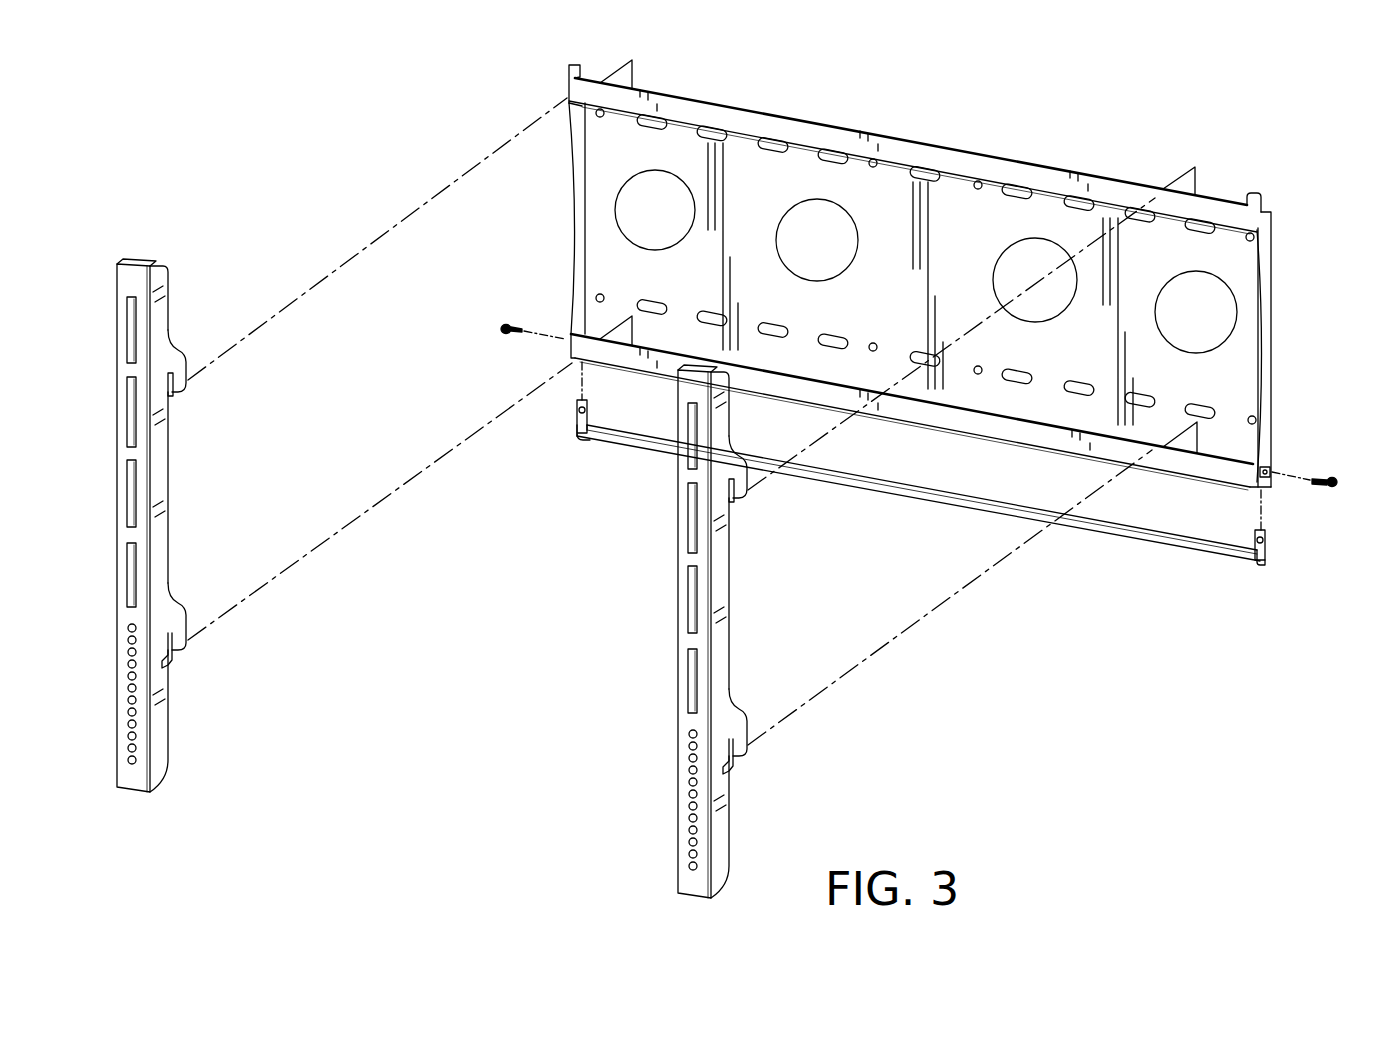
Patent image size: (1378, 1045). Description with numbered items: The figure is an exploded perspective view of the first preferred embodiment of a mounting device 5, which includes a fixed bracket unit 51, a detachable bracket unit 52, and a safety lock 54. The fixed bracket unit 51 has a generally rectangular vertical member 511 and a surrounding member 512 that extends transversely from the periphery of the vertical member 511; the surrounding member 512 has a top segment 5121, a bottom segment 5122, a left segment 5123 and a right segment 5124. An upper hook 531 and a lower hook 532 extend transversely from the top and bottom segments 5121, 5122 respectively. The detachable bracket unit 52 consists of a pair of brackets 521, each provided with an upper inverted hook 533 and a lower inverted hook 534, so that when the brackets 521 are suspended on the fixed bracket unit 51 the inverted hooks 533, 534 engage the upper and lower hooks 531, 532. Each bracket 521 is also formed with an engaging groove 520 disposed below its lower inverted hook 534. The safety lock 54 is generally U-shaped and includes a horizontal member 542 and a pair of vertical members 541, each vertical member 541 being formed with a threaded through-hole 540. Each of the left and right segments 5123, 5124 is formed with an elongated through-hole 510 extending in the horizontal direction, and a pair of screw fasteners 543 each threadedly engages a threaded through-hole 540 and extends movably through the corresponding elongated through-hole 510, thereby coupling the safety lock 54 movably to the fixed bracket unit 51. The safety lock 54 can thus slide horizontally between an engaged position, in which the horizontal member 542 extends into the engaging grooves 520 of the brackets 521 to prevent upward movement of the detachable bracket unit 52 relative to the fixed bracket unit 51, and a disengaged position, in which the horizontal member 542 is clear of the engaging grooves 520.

The mounting device 5 is at (368, 138).
The fixed bracket unit 51 is at (546, 250).
The elongated through-hole 510 is at (1268, 470).
The vertical member 511 is at (903, 190).
The surrounding member 512 is at (1265, 262).
The top segment 5121 is at (1263, 222).
The bottom segment 5122 is at (1050, 447).
The left segment 5123 is at (573, 138).
The right segment 5124 is at (1266, 416).
The detachable bracket unit 52 is at (100, 531).
The engaging groove 520 is at (164, 666).
The bracket 521 is at (162, 492).
The upper hook 531 is at (789, 128).
The lower hook 532 is at (978, 424).
The upper inverted hook 533 is at (178, 388).
The lower inverted hook 534 is at (182, 607).
The safety lock 54 is at (1305, 556).
The threaded through-hole 540 is at (580, 410).
The vertical member 541 is at (577, 405).
The horizontal member 542 is at (1170, 540).
The screw fastener 543 is at (500, 328).